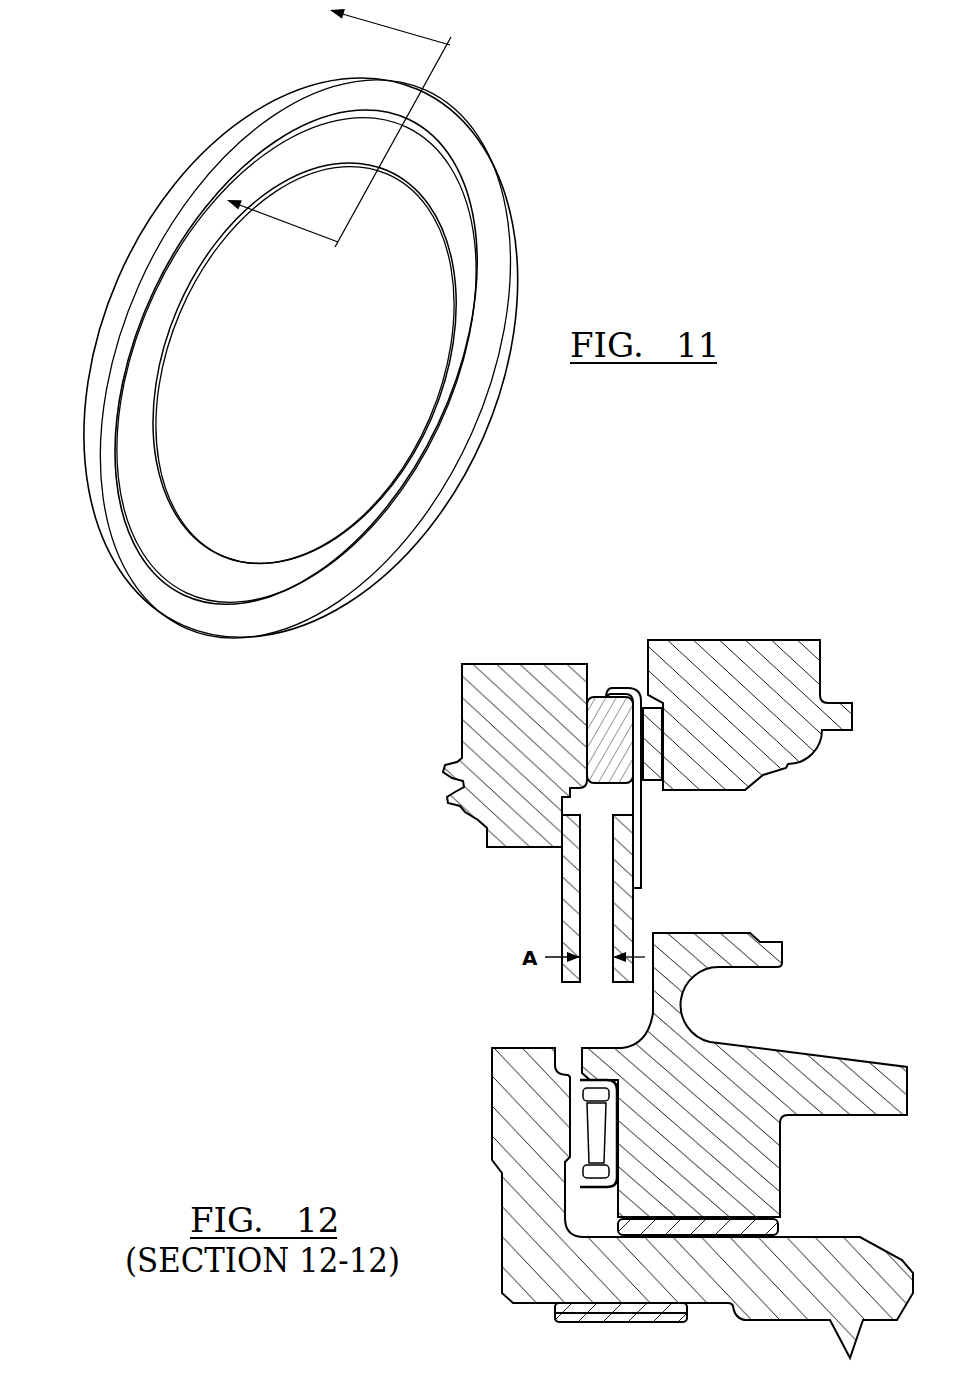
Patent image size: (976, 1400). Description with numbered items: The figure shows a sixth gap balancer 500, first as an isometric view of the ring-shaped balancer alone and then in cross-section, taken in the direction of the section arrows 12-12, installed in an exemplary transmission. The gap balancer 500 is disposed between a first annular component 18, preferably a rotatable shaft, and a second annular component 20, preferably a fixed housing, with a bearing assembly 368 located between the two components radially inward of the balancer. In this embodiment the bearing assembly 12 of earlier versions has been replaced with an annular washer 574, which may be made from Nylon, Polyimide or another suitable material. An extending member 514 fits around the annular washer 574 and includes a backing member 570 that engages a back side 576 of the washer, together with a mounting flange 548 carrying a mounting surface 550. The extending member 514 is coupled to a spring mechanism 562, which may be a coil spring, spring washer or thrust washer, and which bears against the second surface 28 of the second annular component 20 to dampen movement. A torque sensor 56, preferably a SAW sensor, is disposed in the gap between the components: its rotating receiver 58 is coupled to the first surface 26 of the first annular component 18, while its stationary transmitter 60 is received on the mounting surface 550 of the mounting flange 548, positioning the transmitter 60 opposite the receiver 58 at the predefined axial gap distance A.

In FIG. 11, the sixth gap balancer 500 is at (300, 358).
In FIG. 12, the sixth gap balancer 500 is at (624, 736).
In FIG. 11, the backing member 570 is at (300, 358).
In FIG. 12, the backing member 570 is at (620, 690).
In FIG. 11, the annular washer 574 is at (305, 359).
In FIG. 12, the annular washer 574 is at (603, 743).
In FIG. 12, the back side 576 is at (613, 687).
In FIG. 11, the extending member 514 is at (304, 363).
In FIG. 12, the extending member 514 is at (645, 737).
In FIG. 11, the mounting flange 548 is at (296, 357).
In FIG. 12, the mounting flange 548 is at (637, 805).
In FIG. 11, the mounting surface 550 is at (168, 143).
In FIG. 12, the mounting surface 550 is at (640, 860).
In FIG. 11, the bearing assembly 12 is at (354, 138).
In FIG. 12, the first annular component 18 is at (535, 670).
In FIG. 12, the first surface 26 is at (598, 677).
In FIG. 12, the second surface 28 is at (648, 657).
In FIG. 12, the spring mechanism 562 is at (660, 707).
In FIG. 12, the second annular component 20 is at (732, 660).
In FIG. 12, the torque sensor 56 is at (580, 904).
In FIG. 12, the receiver 58 is at (573, 893).
In FIG. 12, the transmitter 60 is at (623, 933).
In FIG. 12, the bearing assembly 368 is at (548, 1137).